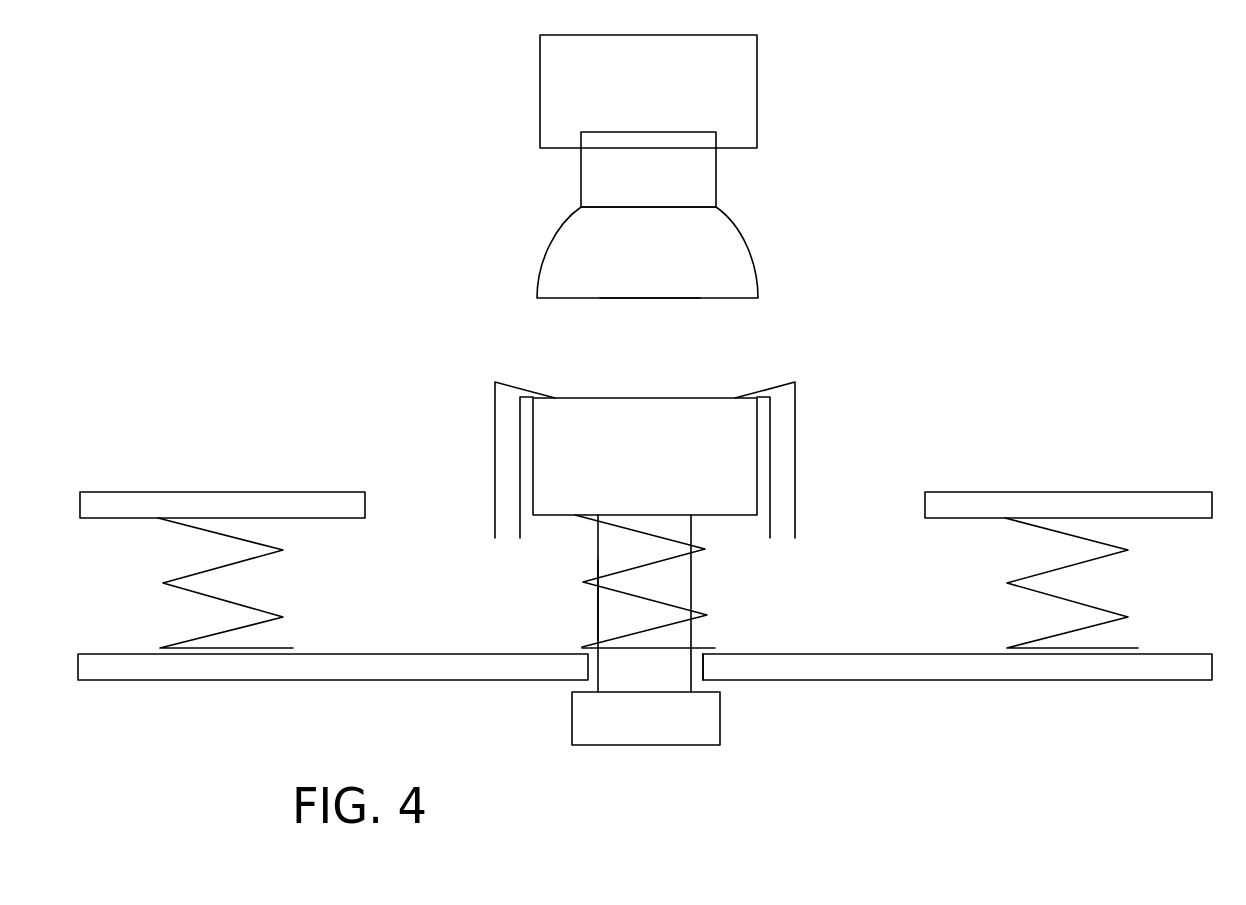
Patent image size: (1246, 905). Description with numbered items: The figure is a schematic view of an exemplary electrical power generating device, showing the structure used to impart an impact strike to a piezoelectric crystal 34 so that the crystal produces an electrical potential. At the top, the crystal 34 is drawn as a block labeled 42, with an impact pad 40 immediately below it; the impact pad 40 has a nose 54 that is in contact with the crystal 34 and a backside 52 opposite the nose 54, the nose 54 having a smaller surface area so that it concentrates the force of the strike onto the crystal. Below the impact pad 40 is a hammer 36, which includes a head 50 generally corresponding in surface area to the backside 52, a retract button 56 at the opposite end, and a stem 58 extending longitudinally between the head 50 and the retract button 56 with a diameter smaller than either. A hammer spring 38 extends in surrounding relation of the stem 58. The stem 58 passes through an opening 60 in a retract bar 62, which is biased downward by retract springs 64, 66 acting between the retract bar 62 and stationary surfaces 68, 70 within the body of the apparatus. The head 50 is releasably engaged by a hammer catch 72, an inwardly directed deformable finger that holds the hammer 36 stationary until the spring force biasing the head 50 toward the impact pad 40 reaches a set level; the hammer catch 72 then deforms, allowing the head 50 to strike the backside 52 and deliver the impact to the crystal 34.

The piezoelectric crystal 34 is at (716, 150).
The hammer 36 is at (585, 622).
The hammer spring 38 is at (693, 550).
The impact pad 40 is at (747, 290).
The cap 42 is at (758, 92).
The head 50 is at (641, 398).
The backside 52 is at (647, 298).
The nose 54 is at (582, 206).
The retract button 56 is at (647, 745).
The stem 58 is at (682, 637).
The opening 60 is at (713, 685).
The retract bar 62 is at (958, 680).
The retract spring 64 is at (163, 583).
The retract spring 66 is at (1128, 617).
The surface 68 is at (221, 492).
The surface 70 is at (1067, 492).
The hammer catch 72 is at (737, 398).